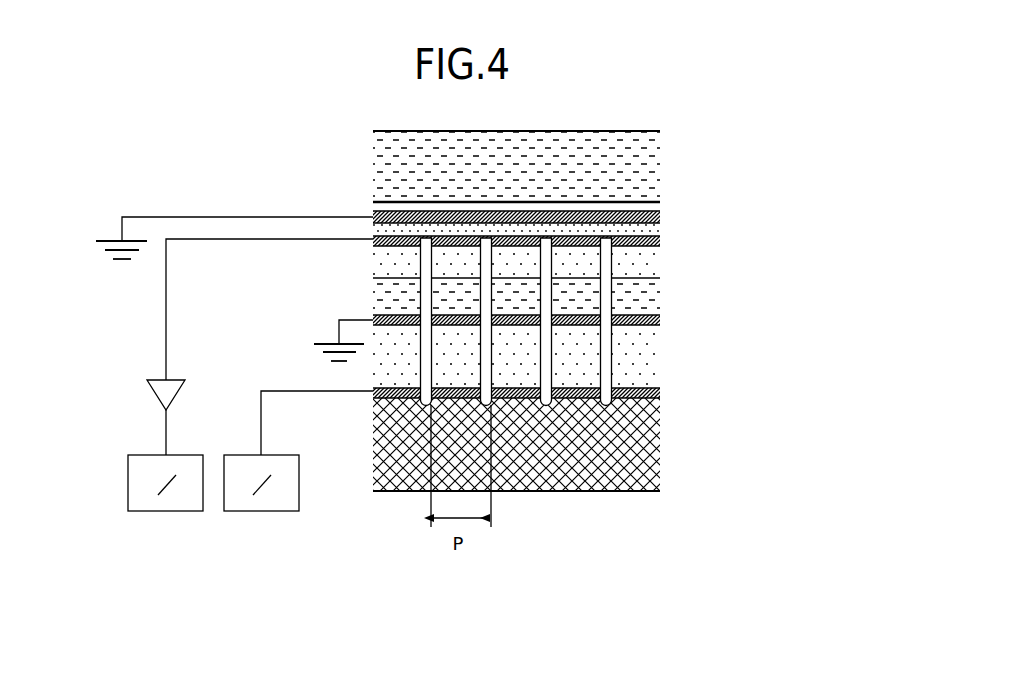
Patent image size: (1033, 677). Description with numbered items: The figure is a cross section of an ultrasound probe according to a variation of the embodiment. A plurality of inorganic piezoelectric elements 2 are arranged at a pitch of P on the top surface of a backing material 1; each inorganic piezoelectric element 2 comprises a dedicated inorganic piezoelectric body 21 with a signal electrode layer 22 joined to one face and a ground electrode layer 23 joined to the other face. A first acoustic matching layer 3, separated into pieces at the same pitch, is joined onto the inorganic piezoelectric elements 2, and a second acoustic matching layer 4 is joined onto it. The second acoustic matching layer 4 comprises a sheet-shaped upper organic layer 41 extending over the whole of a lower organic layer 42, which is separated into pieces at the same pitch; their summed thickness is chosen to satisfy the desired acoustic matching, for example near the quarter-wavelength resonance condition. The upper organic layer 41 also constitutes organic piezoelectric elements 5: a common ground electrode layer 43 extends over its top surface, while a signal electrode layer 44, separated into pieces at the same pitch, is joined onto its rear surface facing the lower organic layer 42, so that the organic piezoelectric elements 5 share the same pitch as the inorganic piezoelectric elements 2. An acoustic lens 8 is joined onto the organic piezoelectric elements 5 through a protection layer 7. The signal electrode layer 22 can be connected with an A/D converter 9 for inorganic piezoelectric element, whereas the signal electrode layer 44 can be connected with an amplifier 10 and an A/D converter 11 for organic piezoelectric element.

The backing material 1 is at (657, 443).
The inorganic piezoelectric element 2 is at (590, 355).
The first acoustic matching layer 3 is at (657, 297).
The second acoustic matching layer 4 is at (616, 252).
The organic piezoelectric element 5 is at (615, 213).
The protection layer 7 is at (660, 205).
The acoustic lens 8 is at (657, 150).
The A/D converter for inorganic piezoelectric element 9 is at (299, 487).
The amplifier for organic piezoelectric element 10 is at (147, 391).
The A/D converter for organic piezoelectric element 11 is at (128, 484).
The inorganic piezoelectric body 21 is at (662, 356).
The signal electrode layer 22 is at (657, 396).
The ground electrode layer 23 is at (657, 320).
The upper organic layer 41 is at (657, 228).
The lower organic layer 42 is at (657, 266).
The ground electrode layer 43 is at (657, 217).
The signal electrode layer 44 is at (657, 240).